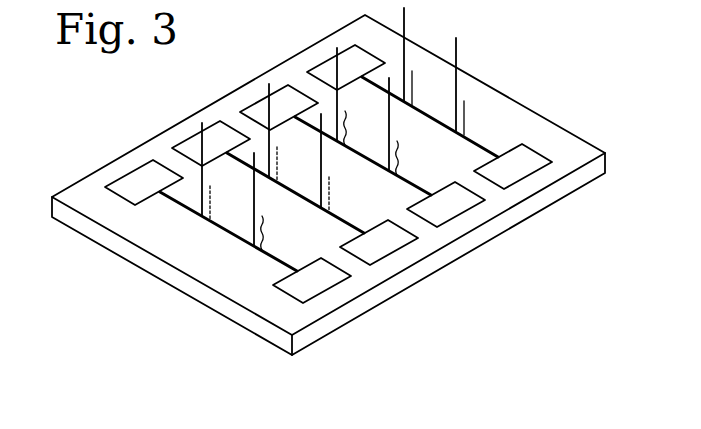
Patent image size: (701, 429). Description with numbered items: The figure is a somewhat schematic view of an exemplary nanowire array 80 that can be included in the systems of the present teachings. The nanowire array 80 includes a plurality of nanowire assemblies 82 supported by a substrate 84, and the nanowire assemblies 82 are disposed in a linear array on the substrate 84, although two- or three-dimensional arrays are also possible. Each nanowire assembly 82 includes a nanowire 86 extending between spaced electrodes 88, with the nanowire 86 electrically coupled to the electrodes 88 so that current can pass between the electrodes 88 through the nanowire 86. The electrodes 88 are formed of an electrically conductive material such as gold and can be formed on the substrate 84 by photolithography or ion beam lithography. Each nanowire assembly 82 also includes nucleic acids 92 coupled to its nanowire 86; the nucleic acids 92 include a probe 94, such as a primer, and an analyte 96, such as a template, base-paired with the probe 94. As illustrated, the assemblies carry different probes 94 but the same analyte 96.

The nanowire array 80 is at (327, 184).
The nanowire assemblies 82 is at (299, 207).
The substrate 84 is at (445, 256).
The nanowire 86 is at (267, 245).
The electrodes 88 is at (130, 192).
The nucleic acids 92 is at (190, 229).
The probe 94 is at (212, 216).
The analyte 96 is at (198, 176).